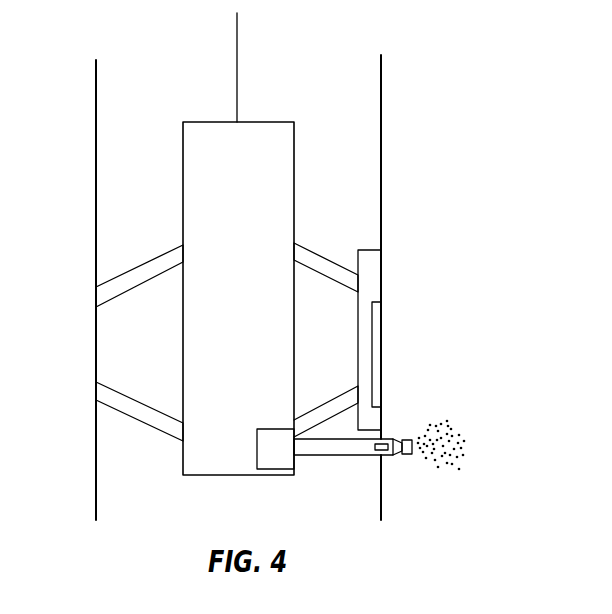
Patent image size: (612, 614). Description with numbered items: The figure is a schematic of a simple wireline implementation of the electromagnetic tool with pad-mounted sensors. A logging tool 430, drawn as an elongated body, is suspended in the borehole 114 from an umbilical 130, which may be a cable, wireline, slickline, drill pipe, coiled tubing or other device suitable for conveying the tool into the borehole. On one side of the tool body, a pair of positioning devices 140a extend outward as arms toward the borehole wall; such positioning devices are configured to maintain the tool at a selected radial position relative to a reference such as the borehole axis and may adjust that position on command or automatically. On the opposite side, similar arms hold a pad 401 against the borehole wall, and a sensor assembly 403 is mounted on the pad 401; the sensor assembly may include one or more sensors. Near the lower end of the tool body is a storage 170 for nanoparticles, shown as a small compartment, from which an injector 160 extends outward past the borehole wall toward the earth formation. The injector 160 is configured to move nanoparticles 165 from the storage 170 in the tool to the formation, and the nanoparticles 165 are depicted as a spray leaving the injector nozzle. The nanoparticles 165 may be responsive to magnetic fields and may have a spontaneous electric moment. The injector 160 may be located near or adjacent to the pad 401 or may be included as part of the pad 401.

The borehole 114 is at (381, 55).
The umbilical 130 is at (237, 40).
The logging tool 430 is at (266, 120).
The positioning device 140a is at (113, 283).
The pad 401 is at (378, 278).
The sensor assembly 403 is at (379, 351).
The storage 170 is at (279, 429).
The injector 160 is at (345, 457).
The nanoparticles 165 is at (433, 442).